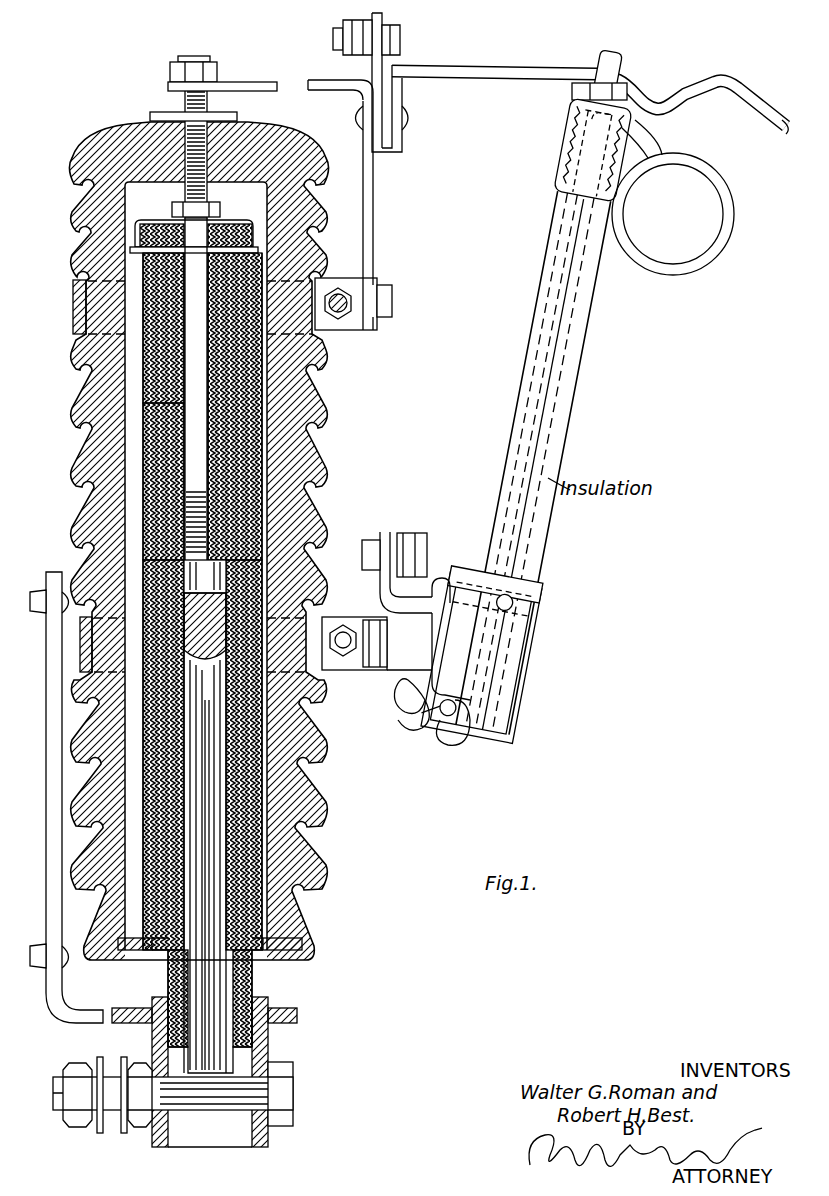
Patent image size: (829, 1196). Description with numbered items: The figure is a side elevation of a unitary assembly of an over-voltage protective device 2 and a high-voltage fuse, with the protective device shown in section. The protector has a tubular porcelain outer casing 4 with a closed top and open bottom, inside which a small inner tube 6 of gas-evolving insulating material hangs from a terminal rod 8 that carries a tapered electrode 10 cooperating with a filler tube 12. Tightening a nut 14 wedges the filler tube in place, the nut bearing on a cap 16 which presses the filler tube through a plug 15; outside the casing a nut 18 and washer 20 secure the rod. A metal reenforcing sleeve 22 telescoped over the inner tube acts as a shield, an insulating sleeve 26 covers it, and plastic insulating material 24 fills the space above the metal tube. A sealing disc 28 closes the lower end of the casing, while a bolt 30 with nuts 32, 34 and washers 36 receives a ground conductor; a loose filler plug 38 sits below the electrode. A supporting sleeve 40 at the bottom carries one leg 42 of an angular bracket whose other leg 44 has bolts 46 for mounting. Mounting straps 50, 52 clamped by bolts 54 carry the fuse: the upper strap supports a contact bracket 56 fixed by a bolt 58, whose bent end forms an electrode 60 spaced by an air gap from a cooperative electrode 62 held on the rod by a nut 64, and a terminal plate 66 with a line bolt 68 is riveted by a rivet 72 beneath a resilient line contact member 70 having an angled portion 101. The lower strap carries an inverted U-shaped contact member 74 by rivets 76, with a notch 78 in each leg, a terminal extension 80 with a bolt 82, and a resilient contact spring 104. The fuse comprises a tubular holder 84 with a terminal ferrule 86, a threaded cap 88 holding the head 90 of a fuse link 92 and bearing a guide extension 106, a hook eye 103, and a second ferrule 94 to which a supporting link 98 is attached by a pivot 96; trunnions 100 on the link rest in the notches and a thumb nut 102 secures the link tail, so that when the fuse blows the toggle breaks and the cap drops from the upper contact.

The over-voltage protective device 2 is at (50, 442).
The outer casing 4 is at (90, 476).
The inner tube 6 is at (143, 398).
The terminal rod 8 is at (150, 346).
The electrode 10 is at (185, 532).
The filler tube 12 is at (143, 414).
The nut 14 is at (172, 209).
The plug 15 is at (130, 257).
The cap 16 is at (136, 228).
The nut 18 is at (176, 97).
The washer 20 is at (150, 115).
The metal reenforcing sleeve 22 is at (262, 765).
The plastic insulating material 24 is at (256, 380).
The insulating sleeve 26 is at (258, 826).
The sealing disc 28 is at (290, 950).
The bolt 30 is at (290, 1100).
The nut 32 is at (144, 1128).
The nut 34 is at (80, 1128).
The washers 36 is at (125, 1134).
The filler plug 38 is at (215, 885).
The supporting sleeve 40 is at (270, 1040).
The leg of supporting bracket 42 is at (297, 1013).
The leg of supporting bracket 44 is at (50, 790).
The bolts 46 is at (38, 616).
The upper mounting strap 50 is at (73, 288).
The lower mounting strap 52 is at (80, 660).
The bolts 54 is at (339, 313).
The contact bracket 56 is at (371, 206).
The bolt 58 is at (393, 296).
The electrode 60 is at (320, 82).
The cooperative electrode 62 is at (243, 82).
The nut 64 is at (210, 62).
The terminal plate 66 is at (383, 18).
The bolt 68 is at (400, 40).
The resilient line contact member 70 is at (473, 78).
The rivet 72 is at (404, 120).
The U-shaped contact member 74 is at (400, 668).
The rivets 76 is at (387, 637).
The notch 78 is at (470, 700).
The terminal extension 80 is at (384, 530).
The bolt 82 is at (368, 540).
The tubular holder 84 is at (563, 440).
The terminal ferrule 86 is at (567, 125).
The threaded cap 88 is at (573, 90).
The head of fuse link 90 is at (576, 107).
The fuse link 92 is at (560, 323).
The second ferrule 94 is at (542, 618).
The pivot 96 is at (516, 600).
The supporting link 98 is at (512, 665).
The trunnions 100 is at (447, 722).
The angled portion 101 is at (660, 98).
The thumb nut 102 is at (395, 720).
The hook eye 103 is at (690, 222).
The resilient contact spring 104 is at (445, 578).
The guide extension 106 is at (620, 48).